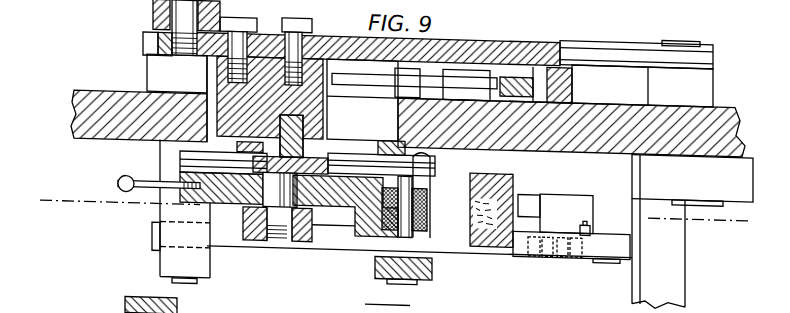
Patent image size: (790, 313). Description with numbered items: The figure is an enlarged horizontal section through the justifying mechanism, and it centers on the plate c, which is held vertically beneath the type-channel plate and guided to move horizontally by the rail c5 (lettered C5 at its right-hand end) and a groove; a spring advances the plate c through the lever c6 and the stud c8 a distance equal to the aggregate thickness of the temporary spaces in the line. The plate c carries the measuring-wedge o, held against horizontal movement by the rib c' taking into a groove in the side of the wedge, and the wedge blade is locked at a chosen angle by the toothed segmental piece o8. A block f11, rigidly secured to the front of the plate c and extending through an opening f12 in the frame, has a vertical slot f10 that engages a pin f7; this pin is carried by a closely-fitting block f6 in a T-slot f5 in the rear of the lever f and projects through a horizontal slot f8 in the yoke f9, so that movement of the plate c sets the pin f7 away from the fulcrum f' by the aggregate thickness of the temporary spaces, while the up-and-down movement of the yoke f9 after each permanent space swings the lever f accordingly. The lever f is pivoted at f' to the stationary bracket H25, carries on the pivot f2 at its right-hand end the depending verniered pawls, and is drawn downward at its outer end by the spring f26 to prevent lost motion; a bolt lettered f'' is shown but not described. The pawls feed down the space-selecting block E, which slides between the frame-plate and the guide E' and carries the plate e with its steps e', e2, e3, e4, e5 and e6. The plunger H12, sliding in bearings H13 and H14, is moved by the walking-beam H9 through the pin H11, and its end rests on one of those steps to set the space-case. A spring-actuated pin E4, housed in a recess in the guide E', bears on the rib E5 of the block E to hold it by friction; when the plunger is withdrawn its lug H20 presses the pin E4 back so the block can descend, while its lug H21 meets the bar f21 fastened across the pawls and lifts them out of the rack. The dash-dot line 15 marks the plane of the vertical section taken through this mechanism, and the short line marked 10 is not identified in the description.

The plate c is at (408, 81).
The rib c' is at (393, 38).
The rail c5 is at (143, 46).
The rail C5 is at (713, 38).
The lever c6 is at (176, 10).
The stud c8 is at (160, 19).
The measuring-wedge o is at (572, 74).
The segmental piece o8 is at (347, 70).
The lever f is at (190, 205).
The pivot f' is at (280, 233).
The bolt f'' is at (266, 46).
The pivot f2 is at (417, 178).
The T-slot f5 is at (180, 153).
The block f6 is at (337, 148).
The pin f7 is at (303, 113).
The horizontal slot f8 is at (380, 137).
The yoke f9 is at (178, 142).
The vertical slot f10 is at (217, 82).
The block f11 is at (304, 147).
The opening f12 is at (207, 111).
The bar f21 is at (427, 203).
The spring f26 is at (118, 178).
The block E is at (568, 181).
The guide E' is at (491, 201).
The spring-actuated pin E4 is at (528, 198).
The rib E5 is at (541, 203).
The plate e is at (686, 232).
The step e' is at (571, 263).
The step e2 is at (580, 242).
The step e3 is at (568, 242).
The step e4 is at (553, 243).
The step e5 is at (540, 243).
The step e6 is at (528, 243).
The walking-beam H9 is at (375, 255).
The pin H11 is at (395, 272).
The plunger H12 is at (157, 231).
The bearing H13 is at (136, 279).
The bearing H14 is at (298, 299).
The lug H20 is at (590, 211).
The lug H21 is at (448, 247).
The stationary bracket H25 is at (255, 240).
The section line 15 is at (394, 214).
The section line 10 is at (362, 303).